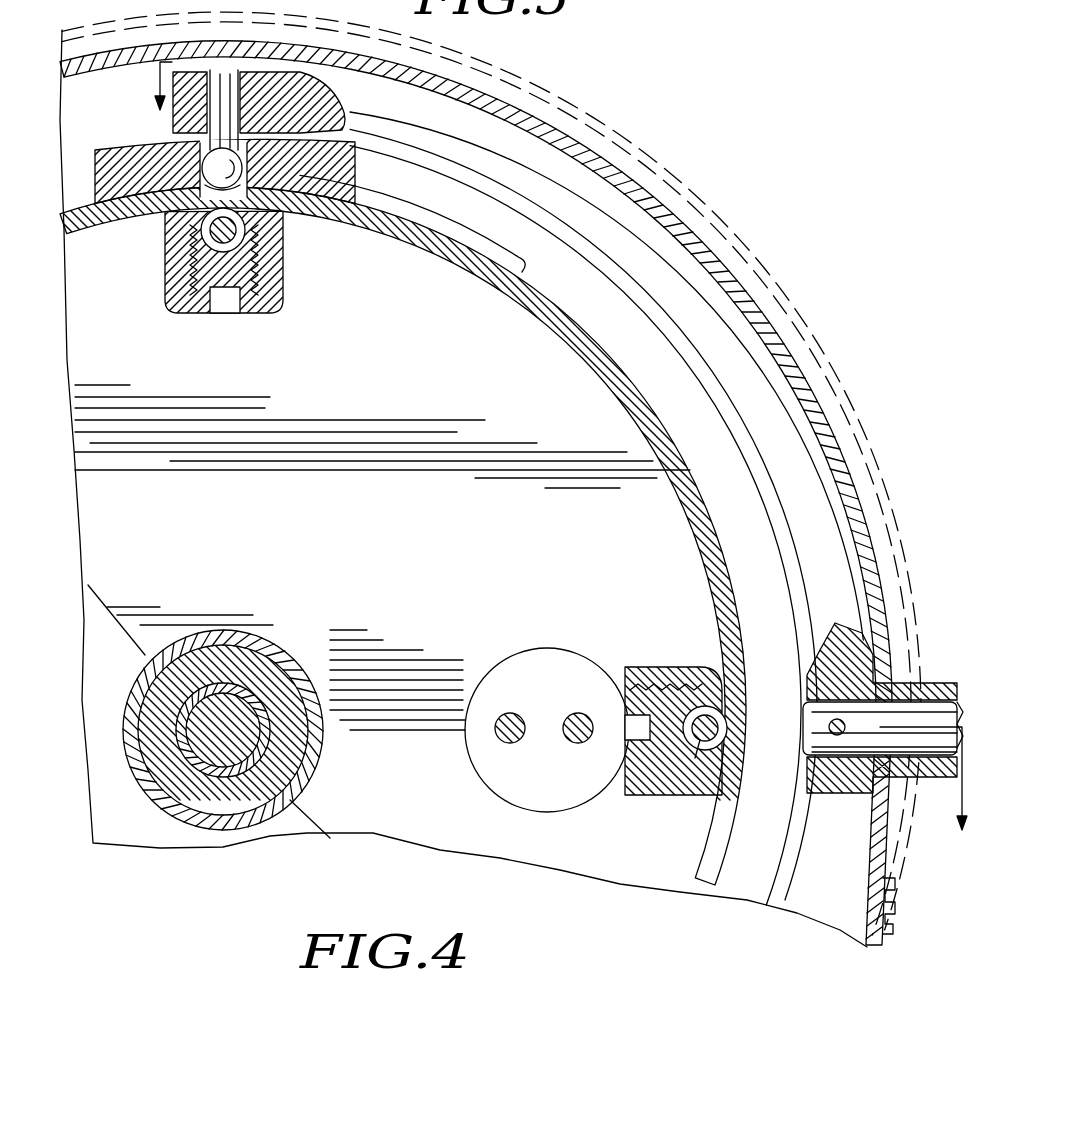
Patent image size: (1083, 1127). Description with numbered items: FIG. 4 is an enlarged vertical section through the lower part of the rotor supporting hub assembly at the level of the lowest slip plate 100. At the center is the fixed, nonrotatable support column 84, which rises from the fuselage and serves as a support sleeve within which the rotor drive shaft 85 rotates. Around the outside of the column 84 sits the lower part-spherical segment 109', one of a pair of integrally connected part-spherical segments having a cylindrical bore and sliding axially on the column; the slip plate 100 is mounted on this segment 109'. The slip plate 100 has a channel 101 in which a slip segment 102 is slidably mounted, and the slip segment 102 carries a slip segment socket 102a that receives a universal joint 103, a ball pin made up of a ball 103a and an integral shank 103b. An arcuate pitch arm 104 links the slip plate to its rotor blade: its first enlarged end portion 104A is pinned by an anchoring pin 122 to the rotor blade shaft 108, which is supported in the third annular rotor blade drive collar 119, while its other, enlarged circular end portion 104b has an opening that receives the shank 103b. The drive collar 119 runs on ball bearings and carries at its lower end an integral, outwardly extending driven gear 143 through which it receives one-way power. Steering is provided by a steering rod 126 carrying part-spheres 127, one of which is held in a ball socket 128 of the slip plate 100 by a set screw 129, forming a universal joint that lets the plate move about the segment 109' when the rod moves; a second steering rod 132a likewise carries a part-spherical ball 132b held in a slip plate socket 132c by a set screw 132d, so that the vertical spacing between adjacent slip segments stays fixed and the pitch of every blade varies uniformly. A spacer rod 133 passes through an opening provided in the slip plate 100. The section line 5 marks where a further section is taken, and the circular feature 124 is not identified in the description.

The section line 5- 5 is at (544, 464).
The support column 84 is at (210, 682).
The rotor drive shaft 85 is at (227, 747).
The slip plate 100 is at (668, 489).
The channel 101 is at (520, 266).
The slip segment 102 is at (335, 186).
The slip segment socket 102a is at (283, 233).
The universal joint 103 is at (202, 155).
The ball 103a is at (217, 180).
The shank 103b is at (215, 95).
The arcuate pitch arm 104 is at (768, 423).
The first enlarged end portion 104A is at (862, 680).
The enlarged circular end portion 104b is at (265, 85).
The rotor blade shaft 108 is at (906, 848).
The part-spherical lower segment 109' is at (541, 449).
The third annular rotor blade drive collar 119 is at (728, 272).
The anchoring pin 122 is at (836, 738).
The boss 124 is at (500, 745).
The steering rod 126 is at (708, 760).
The part-sphere 127 is at (698, 752).
The ball socket 128 is at (652, 673).
The set screw 129 is at (628, 712).
The second steering rod 132a is at (222, 240).
The part-spherical ball 132b is at (285, 285).
The slip plate socket 132c is at (210, 235).
The set screw 132d is at (247, 312).
The spacer rod 133 is at (575, 748).
The driven gear 143 is at (897, 930).